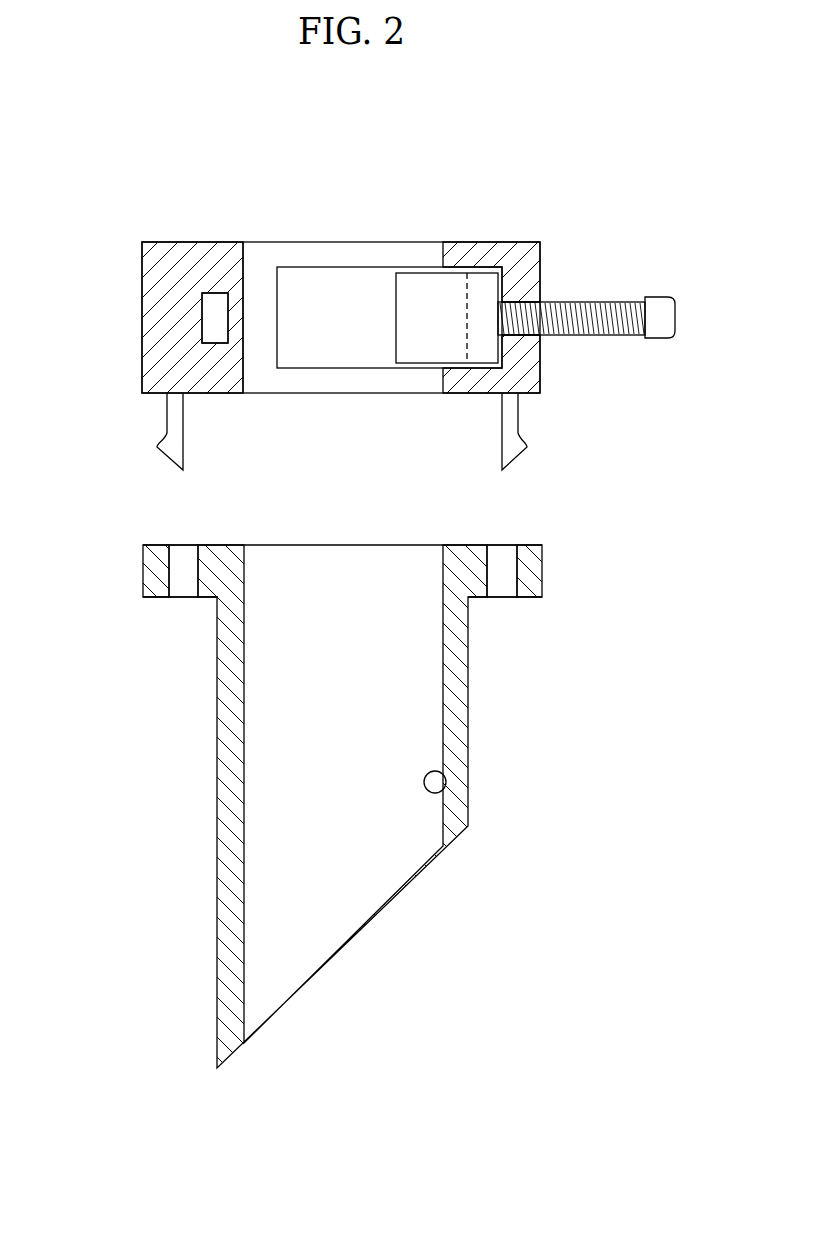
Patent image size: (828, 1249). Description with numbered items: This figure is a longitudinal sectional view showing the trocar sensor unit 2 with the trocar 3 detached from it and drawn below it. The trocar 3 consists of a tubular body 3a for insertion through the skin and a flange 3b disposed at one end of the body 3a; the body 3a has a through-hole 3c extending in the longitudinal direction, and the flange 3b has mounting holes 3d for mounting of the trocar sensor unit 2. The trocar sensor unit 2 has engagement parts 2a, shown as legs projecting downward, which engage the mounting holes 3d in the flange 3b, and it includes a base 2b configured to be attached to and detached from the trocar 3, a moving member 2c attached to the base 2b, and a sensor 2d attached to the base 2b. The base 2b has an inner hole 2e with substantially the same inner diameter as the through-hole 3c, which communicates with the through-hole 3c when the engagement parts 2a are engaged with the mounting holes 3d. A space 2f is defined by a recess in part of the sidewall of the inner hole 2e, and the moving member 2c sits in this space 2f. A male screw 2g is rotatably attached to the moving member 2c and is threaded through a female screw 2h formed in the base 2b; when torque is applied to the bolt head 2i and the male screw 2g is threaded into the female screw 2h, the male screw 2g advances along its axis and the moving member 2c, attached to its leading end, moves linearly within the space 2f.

The trocar sensor unit 2 is at (506, 192).
The engagement parts 2a is at (163, 464).
The base 2b is at (142, 303).
The moving member 2c is at (420, 268).
The sensor 2d is at (229, 318).
The inner hole 2e is at (244, 382).
The space 2f is at (304, 277).
The male screw 2g is at (609, 300).
The female screw 2h is at (540, 304).
The bolt head 2i is at (657, 339).
The trocar 3 is at (563, 660).
The tubular body 3a is at (468, 733).
The flange 3b is at (542, 566).
The through-hole 3c is at (446, 790).
The mounting holes 3d is at (186, 562).